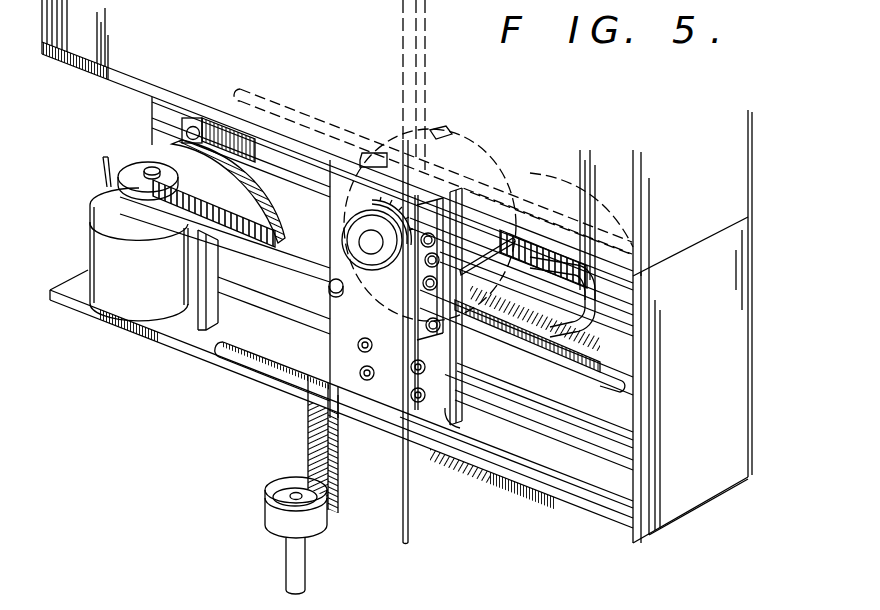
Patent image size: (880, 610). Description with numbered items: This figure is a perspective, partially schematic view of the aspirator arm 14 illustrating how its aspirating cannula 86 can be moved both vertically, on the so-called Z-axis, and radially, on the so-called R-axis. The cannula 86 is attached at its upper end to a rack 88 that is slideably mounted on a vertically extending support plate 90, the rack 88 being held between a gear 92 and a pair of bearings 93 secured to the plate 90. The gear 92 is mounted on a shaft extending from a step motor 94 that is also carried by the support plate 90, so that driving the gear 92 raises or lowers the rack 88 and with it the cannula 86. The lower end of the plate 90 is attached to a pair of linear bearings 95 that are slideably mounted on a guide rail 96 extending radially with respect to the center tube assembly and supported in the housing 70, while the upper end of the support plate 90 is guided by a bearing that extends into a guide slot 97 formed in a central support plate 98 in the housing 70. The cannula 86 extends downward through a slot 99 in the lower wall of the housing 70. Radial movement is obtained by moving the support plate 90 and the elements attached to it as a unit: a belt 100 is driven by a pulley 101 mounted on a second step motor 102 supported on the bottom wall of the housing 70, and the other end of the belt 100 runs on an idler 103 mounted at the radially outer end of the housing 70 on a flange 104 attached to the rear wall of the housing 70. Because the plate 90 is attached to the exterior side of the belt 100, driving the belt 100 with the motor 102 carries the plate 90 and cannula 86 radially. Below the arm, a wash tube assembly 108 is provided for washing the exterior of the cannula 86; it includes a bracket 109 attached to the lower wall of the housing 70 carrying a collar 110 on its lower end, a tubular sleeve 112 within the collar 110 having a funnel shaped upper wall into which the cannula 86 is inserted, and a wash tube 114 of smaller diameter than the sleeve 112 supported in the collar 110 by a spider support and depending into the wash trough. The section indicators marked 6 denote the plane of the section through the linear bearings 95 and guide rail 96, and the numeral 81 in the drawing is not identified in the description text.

The aspirator arm 14 is at (764, 172).
The housing 70 is at (735, 346).
The mounting bracket 81 is at (381, 158).
The aspirating cannula 86 is at (410, 516).
The rack 88 is at (406, 312).
The support plate 90 is at (455, 414).
The gear 92 is at (397, 268).
The bearings 93 is at (437, 242).
The step motor 94 is at (474, 139).
The linear bearings 95 is at (467, 371).
The guide rail 96 is at (286, 318).
The guide slot 97 is at (292, 112).
The central support plate 98 is at (120, 78).
The slot 99 is at (303, 366).
The belt 100 is at (210, 241).
The pulley 101 is at (137, 168).
The step motor 102 is at (96, 257).
The idler 103 is at (622, 383).
The flange 104 is at (182, 124).
The wash tube assembly 108 is at (306, 442).
The bracket 109 is at (322, 461).
The collar 110 is at (278, 518).
The tubular sleeve 112 is at (287, 493).
The wash tube 114 is at (297, 562).
The section line 6- 6 is at (303, 266).